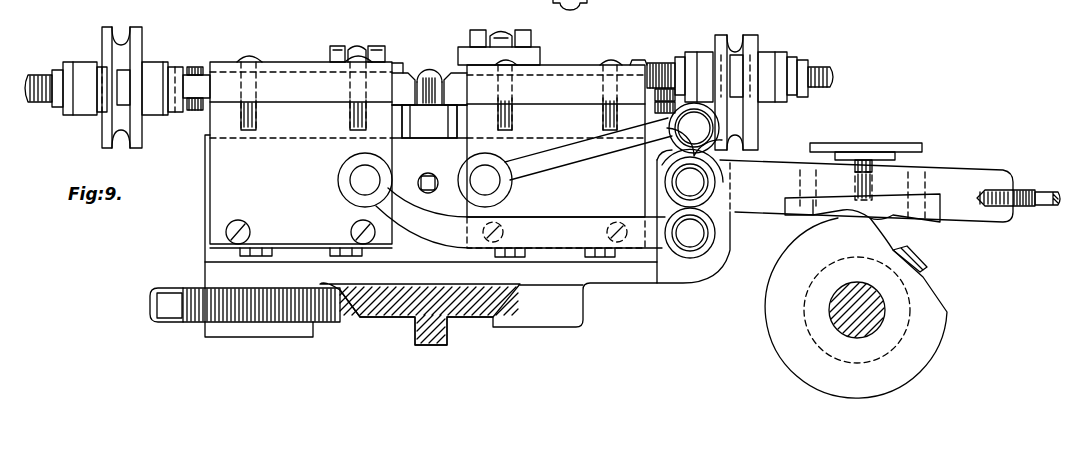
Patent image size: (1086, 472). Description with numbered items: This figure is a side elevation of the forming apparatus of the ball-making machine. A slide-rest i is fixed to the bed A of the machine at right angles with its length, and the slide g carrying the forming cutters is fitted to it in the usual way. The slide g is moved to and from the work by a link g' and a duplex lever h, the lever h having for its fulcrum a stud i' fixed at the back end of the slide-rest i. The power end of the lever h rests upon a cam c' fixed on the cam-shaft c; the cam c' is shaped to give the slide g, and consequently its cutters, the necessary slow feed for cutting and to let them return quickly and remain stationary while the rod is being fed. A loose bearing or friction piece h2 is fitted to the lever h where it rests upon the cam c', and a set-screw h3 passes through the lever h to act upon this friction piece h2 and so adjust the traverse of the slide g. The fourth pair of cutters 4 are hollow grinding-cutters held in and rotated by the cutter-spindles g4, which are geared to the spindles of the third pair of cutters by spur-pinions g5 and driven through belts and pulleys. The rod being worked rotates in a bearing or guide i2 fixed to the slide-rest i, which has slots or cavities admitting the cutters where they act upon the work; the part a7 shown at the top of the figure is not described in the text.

The threaded shaft portion g5 is at (193, 70).
The roller block g is at (428, 143).
The clamp piece g4 is at (429, 100).
The clamp bolt 4 is at (428, 100).
The frame spacer i2 is at (429, 123).
The roller i' is at (528, 180).
The link g' is at (524, 183).
The frame i is at (440, 236).
The bed A is at (420, 314).
The arm h is at (890, 191).
The plate h3 is at (866, 146).
The lever h2 is at (862, 205).
The cam c' is at (856, 308).
The cam shaft c is at (848, 310).
The part a7 is at (582, 9).